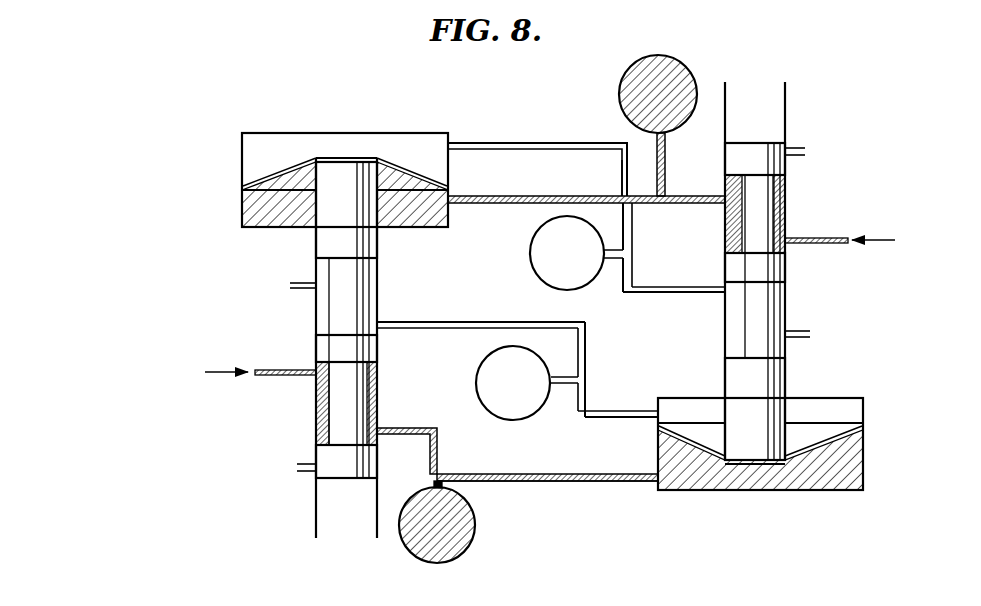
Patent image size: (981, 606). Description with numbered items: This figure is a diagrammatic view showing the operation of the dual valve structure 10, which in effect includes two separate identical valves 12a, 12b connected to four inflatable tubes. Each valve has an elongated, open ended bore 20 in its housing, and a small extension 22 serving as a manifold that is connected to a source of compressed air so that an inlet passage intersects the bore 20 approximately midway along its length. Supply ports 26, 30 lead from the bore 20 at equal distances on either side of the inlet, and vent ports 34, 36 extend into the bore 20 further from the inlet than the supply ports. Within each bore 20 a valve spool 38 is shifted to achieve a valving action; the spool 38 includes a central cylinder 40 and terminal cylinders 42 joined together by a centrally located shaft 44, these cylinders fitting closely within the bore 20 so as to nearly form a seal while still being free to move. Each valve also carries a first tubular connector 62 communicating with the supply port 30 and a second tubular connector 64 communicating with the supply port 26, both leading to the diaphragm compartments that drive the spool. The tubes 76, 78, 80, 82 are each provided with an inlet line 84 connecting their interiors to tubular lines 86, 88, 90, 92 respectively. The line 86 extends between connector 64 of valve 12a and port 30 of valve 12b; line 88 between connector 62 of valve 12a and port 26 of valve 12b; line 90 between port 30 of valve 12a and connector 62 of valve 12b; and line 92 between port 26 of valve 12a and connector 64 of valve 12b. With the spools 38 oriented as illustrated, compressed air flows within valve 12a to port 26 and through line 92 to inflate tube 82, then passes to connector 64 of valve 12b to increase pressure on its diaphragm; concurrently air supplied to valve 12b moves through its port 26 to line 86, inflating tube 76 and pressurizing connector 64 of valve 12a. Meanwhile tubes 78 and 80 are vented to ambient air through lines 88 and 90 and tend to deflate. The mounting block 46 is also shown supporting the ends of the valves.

The dual valve structure 10 is at (710, 58).
The first valve 12a is at (296, 250).
The second valve 12b is at (803, 375).
The bore 20 is at (313, 311).
The extension 22 is at (277, 368).
The supply port 26 is at (402, 427).
The supply port 30 is at (403, 325).
The vent port 34 is at (300, 281).
The vent port 36 is at (300, 472).
The valve spool 38 is at (727, 265).
The central cylinder 40 is at (355, 350).
The terminal cylinder 42 is at (357, 243).
The shaft 44 is at (347, 285).
The mounting block 46 is at (388, 147).
The first tubular connector 62 is at (466, 204).
The second tubular connector 64 is at (480, 149).
The tube 76 is at (674, 56).
The tube 78 is at (530, 263).
The tube 80 is at (486, 419).
The tube 82 is at (470, 550).
The inlet line 84 is at (666, 170).
The tubular line 86 is at (585, 142).
The tubular line 88 is at (608, 193).
The tubular line 90 is at (586, 352).
The tubular line 92 is at (512, 481).